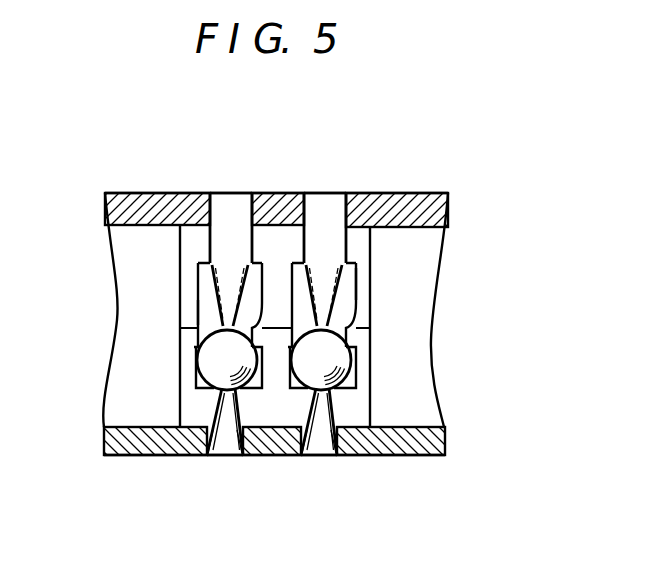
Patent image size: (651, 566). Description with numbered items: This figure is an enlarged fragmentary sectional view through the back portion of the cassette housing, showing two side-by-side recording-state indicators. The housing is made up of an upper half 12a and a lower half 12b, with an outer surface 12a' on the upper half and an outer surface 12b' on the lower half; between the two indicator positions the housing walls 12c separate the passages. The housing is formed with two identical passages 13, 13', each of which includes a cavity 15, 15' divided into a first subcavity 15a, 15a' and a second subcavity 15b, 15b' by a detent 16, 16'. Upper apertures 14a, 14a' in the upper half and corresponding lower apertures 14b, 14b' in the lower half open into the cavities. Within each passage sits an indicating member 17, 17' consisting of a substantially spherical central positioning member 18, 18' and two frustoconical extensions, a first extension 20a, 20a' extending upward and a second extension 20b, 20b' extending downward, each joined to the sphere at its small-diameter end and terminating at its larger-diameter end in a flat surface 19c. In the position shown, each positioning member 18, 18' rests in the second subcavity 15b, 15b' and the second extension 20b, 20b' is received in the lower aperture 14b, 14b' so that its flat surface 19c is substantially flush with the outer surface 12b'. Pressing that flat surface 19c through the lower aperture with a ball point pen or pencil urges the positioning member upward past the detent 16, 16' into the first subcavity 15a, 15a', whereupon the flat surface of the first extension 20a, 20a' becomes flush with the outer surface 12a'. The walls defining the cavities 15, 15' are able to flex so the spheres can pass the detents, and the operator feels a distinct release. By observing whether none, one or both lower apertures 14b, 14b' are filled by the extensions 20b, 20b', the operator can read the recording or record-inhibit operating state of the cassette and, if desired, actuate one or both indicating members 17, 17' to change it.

The upper half 12a is at (156, 169).
The outer surface of upper half 12a' is at (424, 170).
The lower half 12b is at (134, 474).
The outer surface of lower half 12b' is at (401, 474).
The partition wall of housing 12c is at (273, 230).
The passage 13 is at (247, 169).
The passage 13' is at (329, 169).
The upper aperture 14a is at (212, 188).
The upper aperture 14a' is at (371, 188).
The lower aperture 14b is at (177, 470).
The lower aperture 14b' is at (352, 476).
The cavity 15 is at (133, 354).
The cavity 15' is at (435, 355).
The first subcavity 15a is at (151, 300).
The first subcavity 15a' is at (411, 305).
The second subcavity 15b is at (141, 374).
The second subcavity 15b' is at (416, 381).
The detent 16 is at (166, 306).
The detent 16' is at (382, 297).
The indicating member 17 is at (150, 361).
The indicating member 17' is at (400, 398).
The positioning member 18 is at (147, 369).
The positioning member 18' is at (402, 374).
The flat surface 19c is at (232, 455).
The first extension 20a is at (237, 154).
The first extension 20a' is at (348, 154).
The second extension 20b is at (211, 488).
The second extension 20b' is at (307, 488).